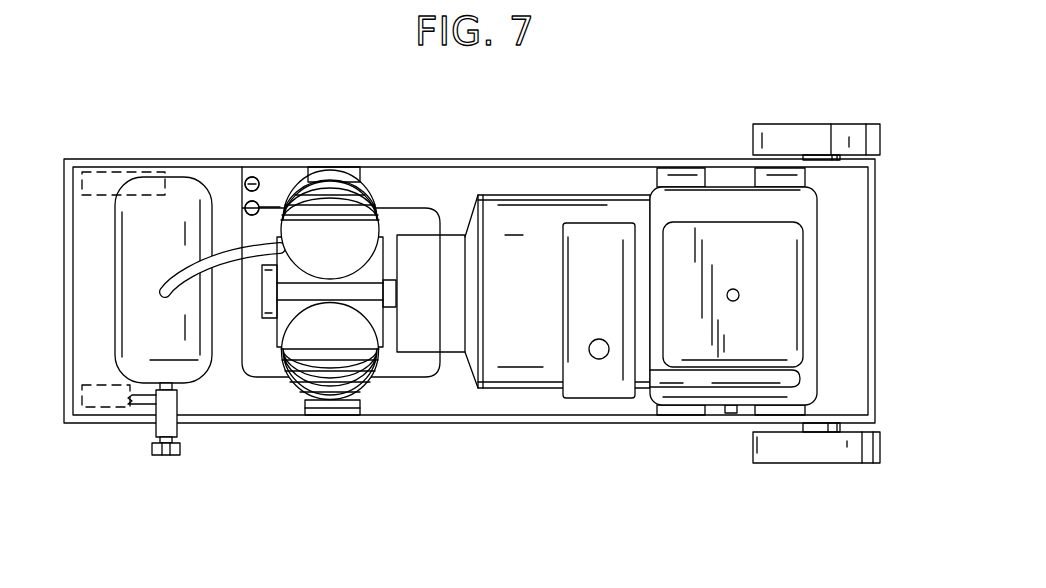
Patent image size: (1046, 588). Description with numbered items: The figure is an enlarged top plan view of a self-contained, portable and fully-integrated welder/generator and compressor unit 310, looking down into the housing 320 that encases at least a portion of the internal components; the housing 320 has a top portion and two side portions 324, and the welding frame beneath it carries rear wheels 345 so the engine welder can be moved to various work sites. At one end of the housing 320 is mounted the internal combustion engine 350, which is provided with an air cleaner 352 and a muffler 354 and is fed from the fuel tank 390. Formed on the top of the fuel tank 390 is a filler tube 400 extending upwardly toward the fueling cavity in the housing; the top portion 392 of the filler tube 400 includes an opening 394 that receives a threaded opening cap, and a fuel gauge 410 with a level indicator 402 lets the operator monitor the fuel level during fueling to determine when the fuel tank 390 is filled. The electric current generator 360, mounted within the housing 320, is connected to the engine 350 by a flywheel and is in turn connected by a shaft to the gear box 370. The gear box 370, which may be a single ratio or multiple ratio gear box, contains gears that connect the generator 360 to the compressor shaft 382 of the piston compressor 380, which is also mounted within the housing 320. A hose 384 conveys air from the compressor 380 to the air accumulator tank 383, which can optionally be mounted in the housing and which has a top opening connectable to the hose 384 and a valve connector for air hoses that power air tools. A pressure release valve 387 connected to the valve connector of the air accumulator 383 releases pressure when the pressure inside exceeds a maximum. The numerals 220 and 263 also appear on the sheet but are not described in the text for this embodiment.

The welder/generator and compressor unit 310 is at (583, 104).
The housing 320 is at (297, 433).
The side portions 324 is at (830, 127).
The rear wheels 345 is at (770, 133).
The internal combustion engine 350 is at (782, 397).
The air cleaner 352 is at (695, 350).
The muffler 354 is at (607, 237).
The electric current generator 360 is at (537, 390).
The gear box 370 is at (415, 340).
The piston compressor 380 is at (340, 387).
The compressor shaft 382 is at (391, 296).
The air accumulator tank 383 is at (123, 361).
The hose 384 is at (178, 287).
The pressure release valve 387 is at (167, 455).
The fuel tank 390 is at (422, 380).
The top portion of filler tube 392 is at (256, 202).
The opening 394 is at (258, 204).
The filler tube 400 is at (262, 206).
The level indicator 402 is at (254, 177).
The fuel gauge 410 is at (246, 180).
The cart 220 is at (566, 573).
The support 263 is at (633, 579).